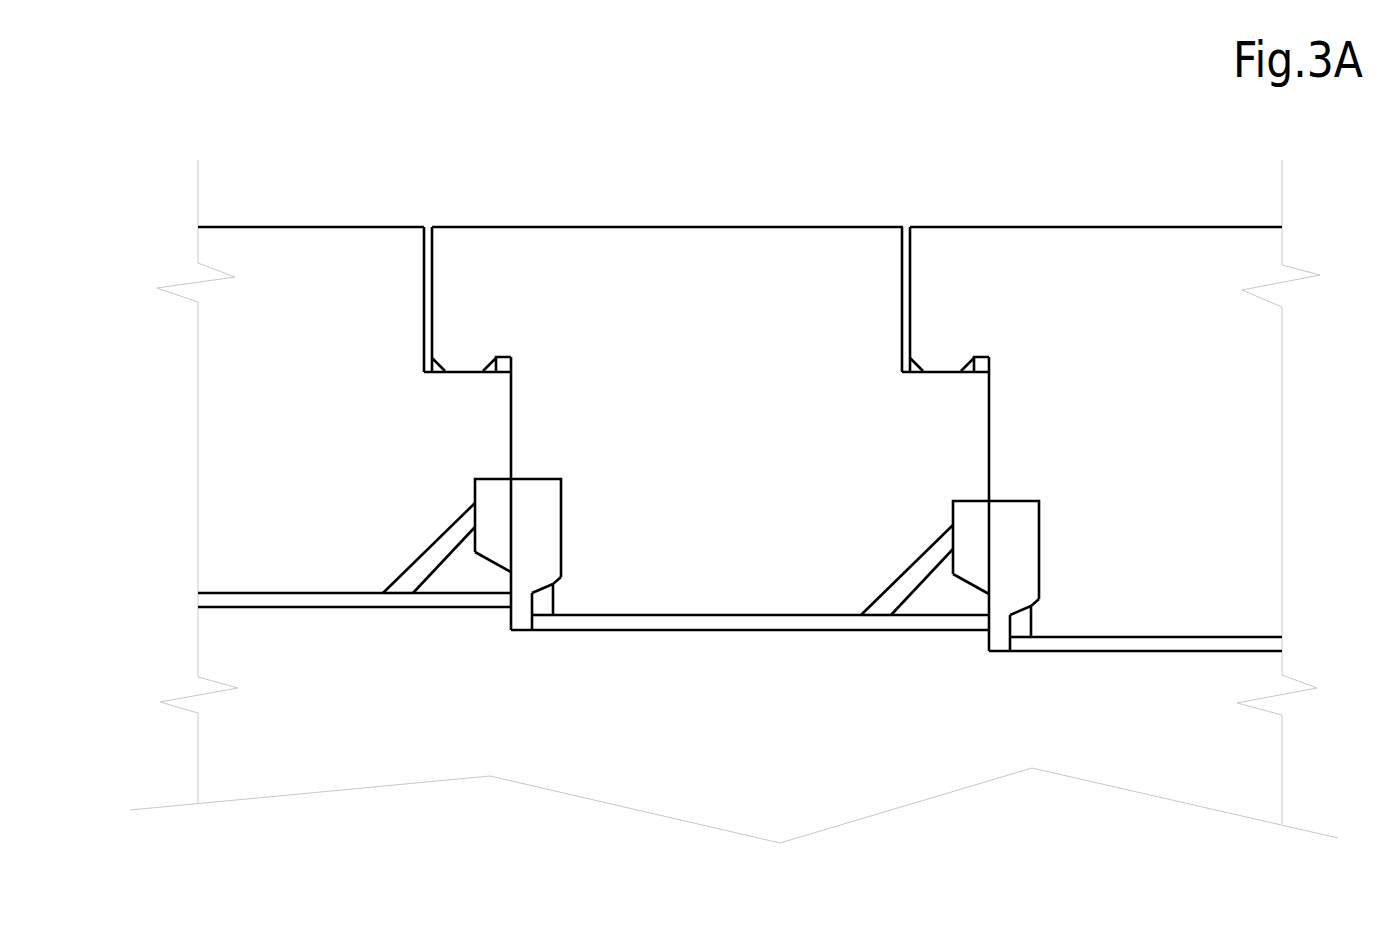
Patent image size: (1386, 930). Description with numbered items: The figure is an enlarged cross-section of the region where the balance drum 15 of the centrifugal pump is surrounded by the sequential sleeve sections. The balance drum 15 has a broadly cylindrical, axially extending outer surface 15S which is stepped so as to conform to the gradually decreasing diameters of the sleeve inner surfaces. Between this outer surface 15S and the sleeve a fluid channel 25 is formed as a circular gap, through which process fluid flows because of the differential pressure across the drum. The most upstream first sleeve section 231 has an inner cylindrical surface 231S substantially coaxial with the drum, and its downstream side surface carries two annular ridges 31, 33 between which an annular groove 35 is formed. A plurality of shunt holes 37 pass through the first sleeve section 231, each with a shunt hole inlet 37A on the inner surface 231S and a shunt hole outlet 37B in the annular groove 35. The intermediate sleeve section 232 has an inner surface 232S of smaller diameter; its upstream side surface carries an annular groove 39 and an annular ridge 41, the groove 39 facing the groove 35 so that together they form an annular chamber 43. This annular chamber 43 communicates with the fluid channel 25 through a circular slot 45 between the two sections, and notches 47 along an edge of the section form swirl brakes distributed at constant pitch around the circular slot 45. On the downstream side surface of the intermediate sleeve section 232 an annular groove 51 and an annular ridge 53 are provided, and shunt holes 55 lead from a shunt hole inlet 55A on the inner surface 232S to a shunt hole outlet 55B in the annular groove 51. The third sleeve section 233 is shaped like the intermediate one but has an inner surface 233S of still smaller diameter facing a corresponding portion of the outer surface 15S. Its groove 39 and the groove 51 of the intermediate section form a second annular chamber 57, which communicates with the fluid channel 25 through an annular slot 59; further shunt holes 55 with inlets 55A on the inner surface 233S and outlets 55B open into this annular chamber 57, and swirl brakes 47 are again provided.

The balance drum 15 is at (733, 793).
The outer surface of balance drum 15S is at (680, 632).
The fluid channel 25 is at (250, 597).
The annular ridge 31 is at (483, 572).
The annular ridge 33 is at (487, 421).
The annular groove 35 is at (445, 582).
The shunt hole 37 is at (417, 567).
The shunt hole inlet 37A is at (387, 593).
The shunt hole outlet 37B is at (475, 507).
The annular groove 39 is at (560, 512).
The annular ridge 41 is at (442, 301).
The annular chamber 43 is at (528, 545).
The circular slot 45 is at (523, 615).
The notches (swirl brakes) 47 is at (537, 597).
The annular groove 51 is at (952, 620).
The annular ridge 53 is at (960, 416).
The shunt hole 55 is at (905, 573).
The shunt hole inlet 55A is at (876, 612).
The shunt hole outlet 55B is at (953, 528).
The annular chamber 57 is at (1006, 560).
The annular slot 59 is at (999, 640).
The first sleeve section 231 is at (298, 213).
The inner cylindrical surface of first sleeve section 231S is at (327, 595).
The intermediate sleeve section 232 is at (680, 213).
The inner surface of intermediate sleeve section 232S is at (762, 615).
The third sleeve section 233 is at (1110, 213).
The inner surface of third sleeve section 233S is at (1233, 640).